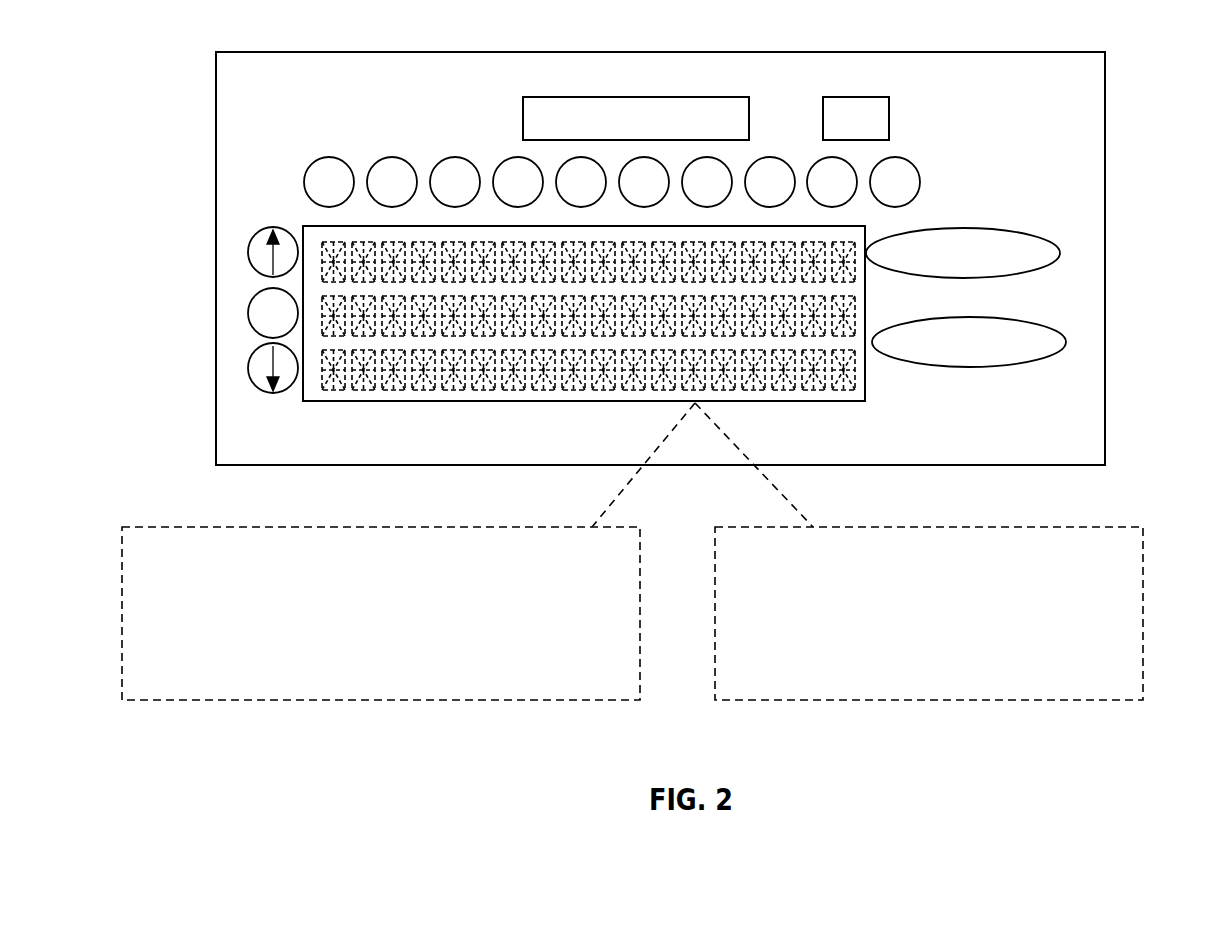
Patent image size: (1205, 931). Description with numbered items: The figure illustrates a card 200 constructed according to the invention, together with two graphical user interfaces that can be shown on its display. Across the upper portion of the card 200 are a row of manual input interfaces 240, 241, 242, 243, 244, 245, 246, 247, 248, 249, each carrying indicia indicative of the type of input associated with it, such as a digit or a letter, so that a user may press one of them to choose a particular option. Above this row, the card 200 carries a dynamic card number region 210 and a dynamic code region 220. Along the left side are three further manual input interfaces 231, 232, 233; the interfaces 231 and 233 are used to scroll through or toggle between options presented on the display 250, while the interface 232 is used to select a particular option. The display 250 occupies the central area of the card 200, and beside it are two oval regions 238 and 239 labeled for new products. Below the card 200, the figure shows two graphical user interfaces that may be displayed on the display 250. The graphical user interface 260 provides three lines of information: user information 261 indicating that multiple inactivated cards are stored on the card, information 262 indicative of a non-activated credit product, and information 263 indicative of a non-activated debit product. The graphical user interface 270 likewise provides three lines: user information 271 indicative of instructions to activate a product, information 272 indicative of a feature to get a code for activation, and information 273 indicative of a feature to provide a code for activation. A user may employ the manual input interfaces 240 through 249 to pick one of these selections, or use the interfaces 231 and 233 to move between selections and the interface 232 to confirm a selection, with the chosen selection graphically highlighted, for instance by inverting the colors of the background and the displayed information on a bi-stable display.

The card 200 is at (1165, 376).
The dynamic card number display 210 is at (706, 97).
The dynamic code display 220 is at (823, 106).
The manual input interface 231 is at (273, 229).
The manual input interface 232 is at (270, 289).
The manual input interface 233 is at (248, 370).
The new product 1 button 238 is at (950, 229).
The new product 2 button 239 is at (962, 318).
The manual input interface 240 is at (306, 174).
The manual input interface 241 is at (393, 157).
The manual input interface 242 is at (456, 157).
The manual input interface 243 is at (519, 157).
The manual input interface 244 is at (582, 157).
The manual input interface 245 is at (645, 157).
The manual input interface 246 is at (708, 157).
The manual input interface 247 is at (771, 157).
The manual input interface 248 is at (833, 157).
The manual input interface 249 is at (896, 157).
The display 250 is at (556, 226).
The graphical user interface 260 is at (360, 625).
The user information 261 is at (135, 560).
The information 262 is at (135, 623).
The information 263 is at (135, 670).
The graphical user interface 270 is at (908, 625).
The user information 271 is at (730, 560).
The information 272 is at (730, 623).
The information 273 is at (730, 670).